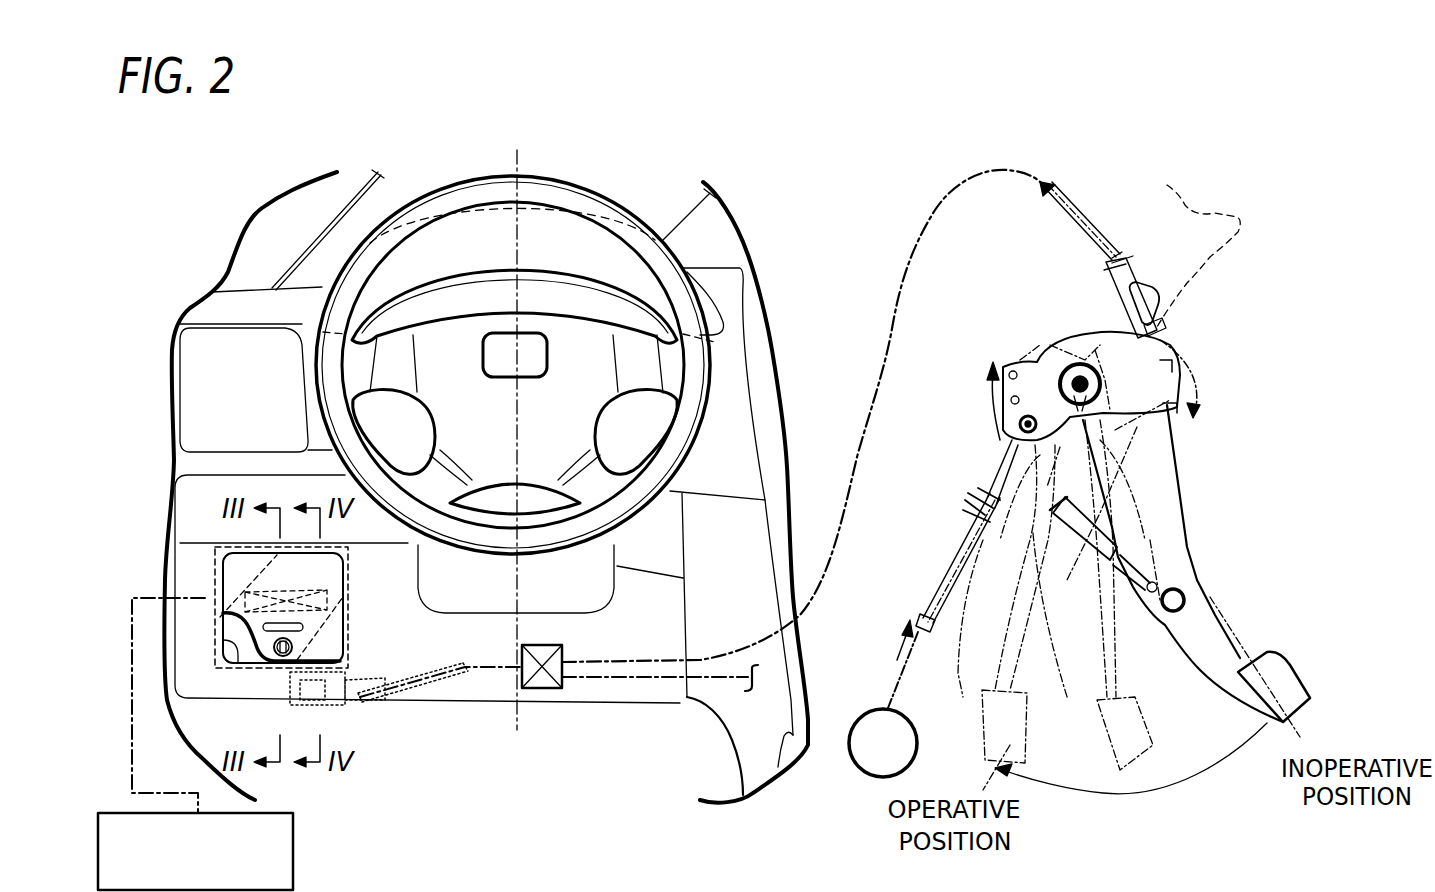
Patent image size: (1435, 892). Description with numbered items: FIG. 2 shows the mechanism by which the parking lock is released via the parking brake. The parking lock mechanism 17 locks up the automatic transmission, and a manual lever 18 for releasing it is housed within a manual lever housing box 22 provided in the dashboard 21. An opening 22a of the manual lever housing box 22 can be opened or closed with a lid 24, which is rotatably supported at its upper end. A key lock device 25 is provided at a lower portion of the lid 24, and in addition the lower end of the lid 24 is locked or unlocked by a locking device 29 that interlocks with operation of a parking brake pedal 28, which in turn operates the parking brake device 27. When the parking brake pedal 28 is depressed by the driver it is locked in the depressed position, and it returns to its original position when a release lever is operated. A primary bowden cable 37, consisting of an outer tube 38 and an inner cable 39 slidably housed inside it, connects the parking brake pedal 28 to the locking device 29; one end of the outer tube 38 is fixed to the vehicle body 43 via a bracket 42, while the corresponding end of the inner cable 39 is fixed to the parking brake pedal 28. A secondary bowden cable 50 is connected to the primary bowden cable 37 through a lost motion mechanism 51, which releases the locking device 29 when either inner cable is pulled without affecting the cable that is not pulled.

The parking lock mechanism 17 is at (293, 850).
The manual lever 18 is at (242, 628).
The dashboard 21 is at (433, 703).
The manual lever housing box 22 is at (213, 577).
The opening 22a is at (238, 662).
The lid 24 is at (325, 573).
The key lock device 25 is at (303, 644).
The parking brake device 27 is at (880, 710).
The parking brake pedal 28 is at (1280, 665).
The locking device 29 is at (352, 683).
The primary bowden cable 37 is at (1066, 260).
The outer tube 38 is at (1083, 232).
The inner cable 39 is at (1113, 288).
The bracket 42 is at (1153, 297).
The vehicle body 43 is at (1200, 248).
The secondary bowden cable 50 is at (660, 677).
The lost motion mechanism 51 is at (541, 688).